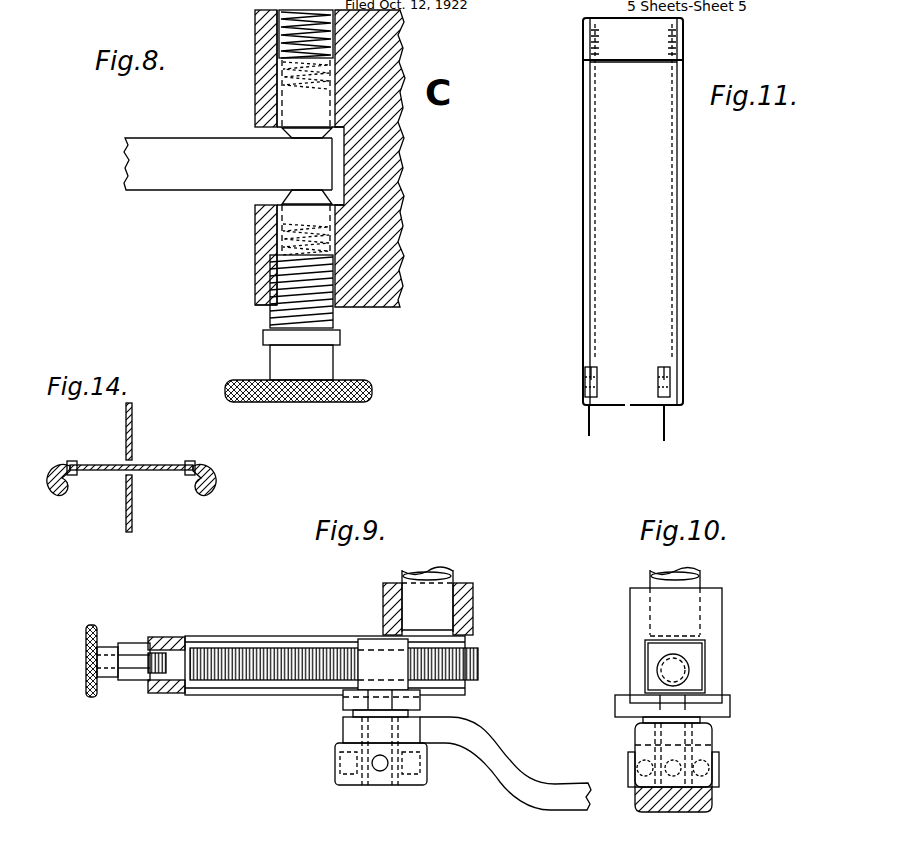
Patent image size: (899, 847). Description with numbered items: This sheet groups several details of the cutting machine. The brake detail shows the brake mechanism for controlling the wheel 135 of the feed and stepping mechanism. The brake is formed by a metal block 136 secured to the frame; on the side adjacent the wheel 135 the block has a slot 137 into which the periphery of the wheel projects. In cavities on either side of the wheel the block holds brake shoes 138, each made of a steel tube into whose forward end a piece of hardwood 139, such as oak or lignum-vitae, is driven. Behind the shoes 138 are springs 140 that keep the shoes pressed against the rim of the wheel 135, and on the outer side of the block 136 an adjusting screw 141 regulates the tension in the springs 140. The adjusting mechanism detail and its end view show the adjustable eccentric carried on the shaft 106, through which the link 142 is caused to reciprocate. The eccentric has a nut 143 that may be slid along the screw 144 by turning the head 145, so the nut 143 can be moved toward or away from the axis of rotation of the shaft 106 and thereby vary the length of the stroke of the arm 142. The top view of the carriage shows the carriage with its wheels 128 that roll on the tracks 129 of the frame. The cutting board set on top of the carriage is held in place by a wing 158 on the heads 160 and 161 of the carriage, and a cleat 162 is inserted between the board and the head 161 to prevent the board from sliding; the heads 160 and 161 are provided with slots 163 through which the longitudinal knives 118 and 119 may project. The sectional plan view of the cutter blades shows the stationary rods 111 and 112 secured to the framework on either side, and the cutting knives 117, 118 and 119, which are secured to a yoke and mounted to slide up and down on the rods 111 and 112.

In FIG. 9, the shaft 106 is at (440, 592).
In FIG. 10, the shaft 106 is at (700, 584).
In FIG. 14, the rod 111 is at (220, 483).
In FIG. 14, the rod 112 is at (57, 492).
In FIG. 14, the cutting knife 117 is at (97, 470).
In FIG. 14, the longitudinal knife 118 is at (133, 516).
In FIG. 14, the longitudinal knife 119 is at (133, 421).
In FIG. 11, the wheels 128 is at (585, 391).
In FIG. 11, the tracks 129 is at (587, 433).
In FIG. 8, the wheel 135 is at (204, 137).
In FIG. 8, the metal block 136 is at (384, 222).
In FIG. 8, the slot 137 is at (256, 205).
In FIG. 8, the brake shoes 138 is at (297, 100).
In FIG. 8, the piece of hardwood 139 is at (302, 134).
In FIG. 8, the springs 140 is at (290, 272).
In FIG. 8, the adjusting screw 141 is at (372, 392).
In FIG. 9, the link 142 is at (492, 783).
In FIG. 10, the link 142 is at (712, 811).
In FIG. 9, the nut 143 is at (346, 775).
In FIG. 10, the nut 143 is at (716, 784).
In FIG. 9, the screw 144 is at (292, 681).
In FIG. 10, the screw 144 is at (690, 672).
In FIG. 9, the head 145 is at (91, 698).
In FIG. 11, the wing 158 is at (669, 370).
In FIG. 11, the head 160 is at (647, 408).
In FIG. 11, the head 161 is at (643, 21).
In FIG. 11, the cleat 162 is at (662, 58).
In FIG. 11, the slots 163 is at (634, 64).